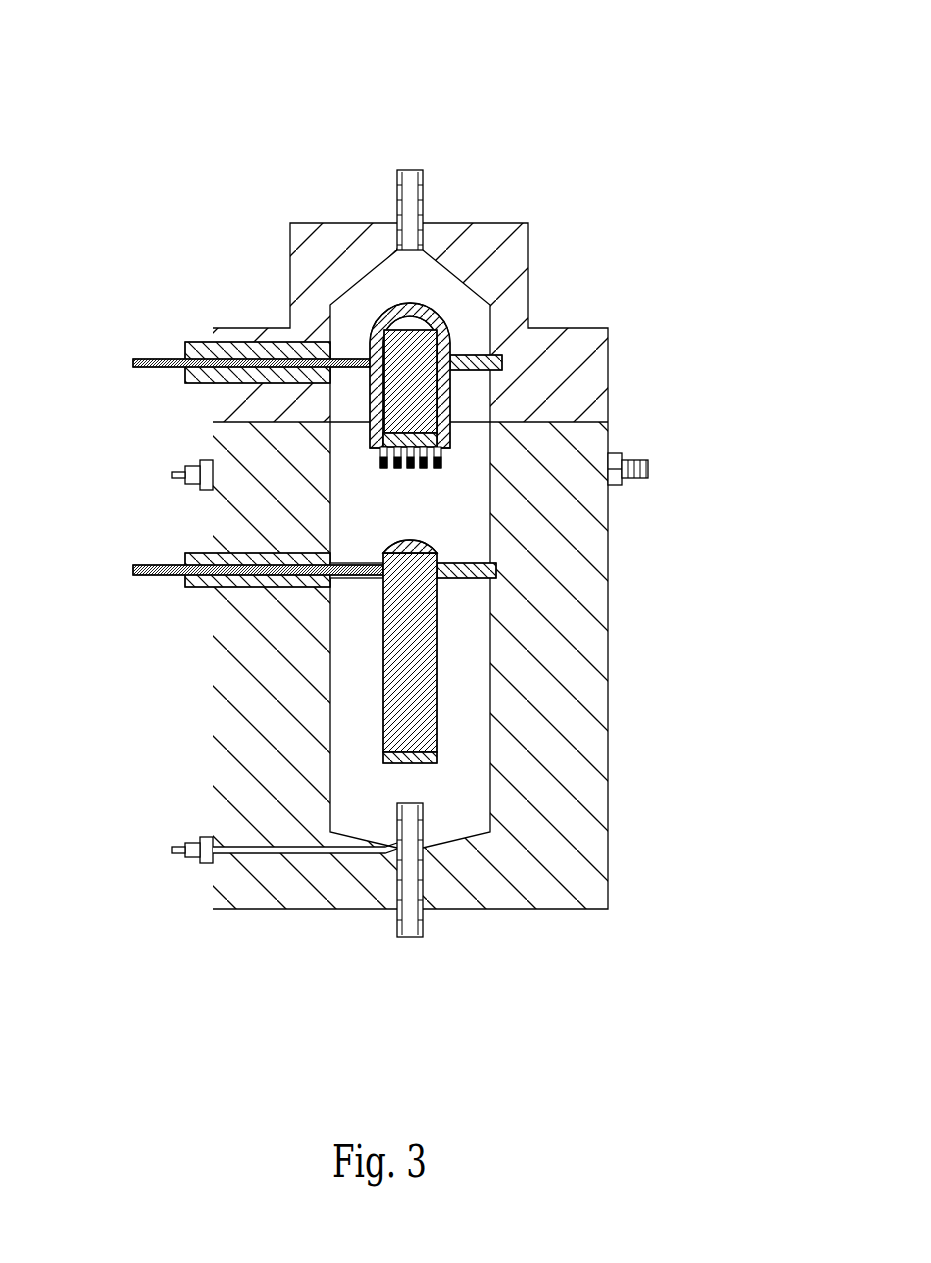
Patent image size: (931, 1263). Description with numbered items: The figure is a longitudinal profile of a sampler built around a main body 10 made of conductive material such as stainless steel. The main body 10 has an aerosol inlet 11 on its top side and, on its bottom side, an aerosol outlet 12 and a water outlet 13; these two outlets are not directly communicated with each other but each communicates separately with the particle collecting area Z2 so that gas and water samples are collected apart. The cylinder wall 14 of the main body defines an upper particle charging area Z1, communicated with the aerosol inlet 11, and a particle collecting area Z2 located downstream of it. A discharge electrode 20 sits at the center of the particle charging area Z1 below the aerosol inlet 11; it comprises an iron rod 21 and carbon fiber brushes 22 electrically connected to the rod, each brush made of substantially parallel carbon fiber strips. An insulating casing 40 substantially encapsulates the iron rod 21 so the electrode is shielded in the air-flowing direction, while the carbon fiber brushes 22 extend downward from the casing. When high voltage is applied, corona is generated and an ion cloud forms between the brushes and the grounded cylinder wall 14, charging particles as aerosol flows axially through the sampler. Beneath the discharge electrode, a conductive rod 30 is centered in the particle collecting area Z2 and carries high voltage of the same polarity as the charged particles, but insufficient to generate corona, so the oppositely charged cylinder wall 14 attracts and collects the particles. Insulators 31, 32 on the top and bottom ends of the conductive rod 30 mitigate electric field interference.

The main body 10 is at (558, 178).
The aerosol inlet 11 is at (410, 175).
The aerosol outlet 12 is at (410, 938).
The water outlet 13 is at (343, 855).
The cylinder wall 14 is at (492, 484).
The discharge electrode 20 is at (592, 399).
The iron rod 21 is at (438, 392).
The carbon fiber brushes 22 is at (442, 465).
The conductive rod 30 is at (425, 668).
The insulator 31 is at (437, 536).
The insulator 32 is at (420, 765).
The insulating casing 40 is at (446, 334).
The particle charging area Z1 is at (368, 474).
The particle collecting area Z2 is at (368, 657).